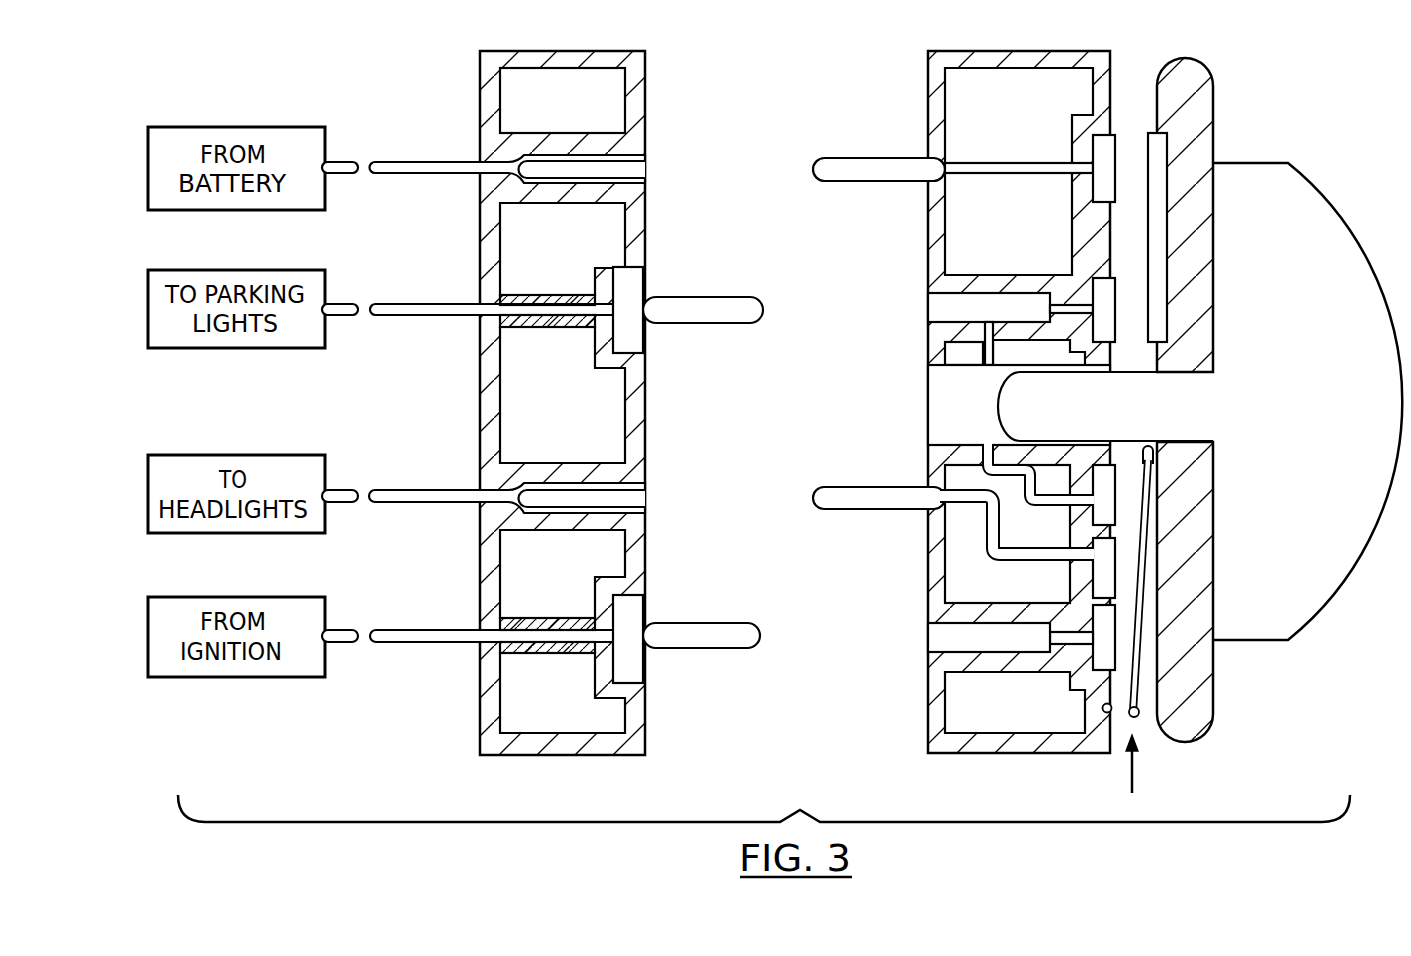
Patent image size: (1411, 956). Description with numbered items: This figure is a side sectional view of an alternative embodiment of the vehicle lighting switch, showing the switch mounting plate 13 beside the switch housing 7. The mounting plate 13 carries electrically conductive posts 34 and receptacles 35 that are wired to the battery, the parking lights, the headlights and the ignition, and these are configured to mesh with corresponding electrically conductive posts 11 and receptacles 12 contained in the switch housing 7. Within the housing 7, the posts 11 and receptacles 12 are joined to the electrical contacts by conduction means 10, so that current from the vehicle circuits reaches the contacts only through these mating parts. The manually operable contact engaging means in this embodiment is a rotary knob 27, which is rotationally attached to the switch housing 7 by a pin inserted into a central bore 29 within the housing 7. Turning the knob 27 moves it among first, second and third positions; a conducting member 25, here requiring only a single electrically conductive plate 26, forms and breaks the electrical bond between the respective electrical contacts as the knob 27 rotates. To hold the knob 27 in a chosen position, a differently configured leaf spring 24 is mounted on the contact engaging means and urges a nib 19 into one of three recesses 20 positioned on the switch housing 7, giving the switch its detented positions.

The switch mounting plate 13 is at (573, 53).
The switch housing 7 is at (1003, 55).
The receptacle 35 is at (640, 172).
The post 34 is at (718, 643).
The conducting member 25 is at (1160, 152).
The electrically conductive plate 26 is at (1198, 400).
The rotary knob 27 is at (1320, 586).
The central bore 29 is at (948, 386).
The conduction means 10 is at (985, 460).
The post 11 is at (847, 490).
The receptacle 12 is at (940, 637).
The leaf spring 24 is at (1143, 631).
The nib 19 is at (1137, 720).
The recess 20 is at (1110, 714).